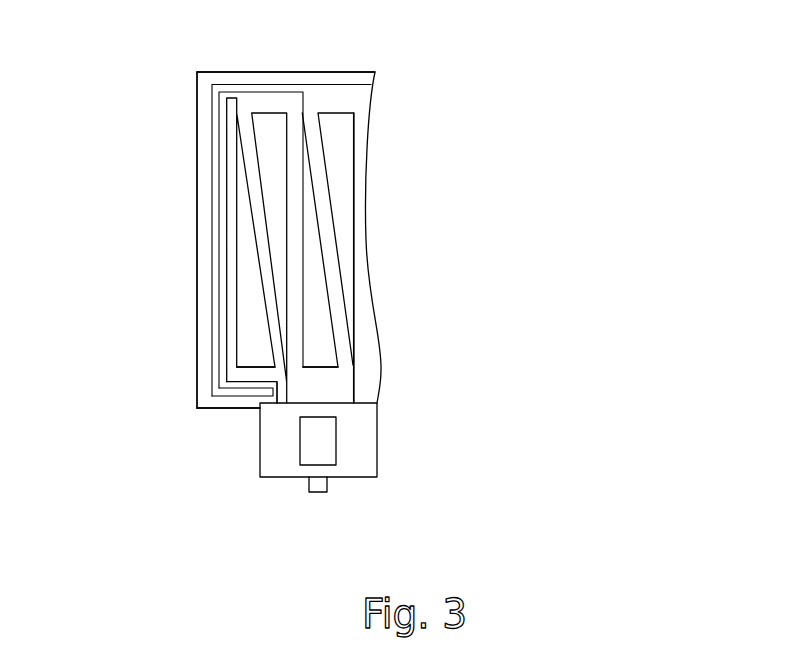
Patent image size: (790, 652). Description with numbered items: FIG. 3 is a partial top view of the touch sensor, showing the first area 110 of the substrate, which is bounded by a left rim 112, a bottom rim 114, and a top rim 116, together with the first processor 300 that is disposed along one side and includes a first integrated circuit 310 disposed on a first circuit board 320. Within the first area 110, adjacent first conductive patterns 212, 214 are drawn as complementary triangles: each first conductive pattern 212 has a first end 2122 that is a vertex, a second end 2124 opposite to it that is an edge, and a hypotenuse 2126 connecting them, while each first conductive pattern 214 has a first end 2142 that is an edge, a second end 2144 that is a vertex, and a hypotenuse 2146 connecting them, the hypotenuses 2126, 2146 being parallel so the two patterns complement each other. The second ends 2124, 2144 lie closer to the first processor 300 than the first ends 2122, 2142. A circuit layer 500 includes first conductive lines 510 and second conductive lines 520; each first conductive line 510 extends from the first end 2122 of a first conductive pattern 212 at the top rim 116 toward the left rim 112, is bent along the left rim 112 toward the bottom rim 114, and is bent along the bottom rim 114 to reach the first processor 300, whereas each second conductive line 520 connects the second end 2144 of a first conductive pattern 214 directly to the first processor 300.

The first area 110 is at (362, 391).
The left rim 112 is at (205, 384).
The bottom rim 114 is at (235, 410).
The top rim 116 is at (268, 72).
The first conductive pattern 212 is at (174, 250).
The first end 2122 is at (303, 117).
The second end 2124 is at (318, 367).
The hypotenuse 2126 is at (275, 232).
The first conductive pattern 214 is at (438, 253).
The first end 2142 is at (347, 113).
The second end 2144 is at (353, 367).
The hypotenuse 2146 is at (305, 228).
The first processor 300 is at (324, 491).
The first integrated circuit 310 is at (303, 477).
The first circuit board 320 is at (360, 477).
The circuit layer 500 is at (467, 226).
The first conductive line 510 is at (293, 92).
The second conductive line 520 is at (463, 262).